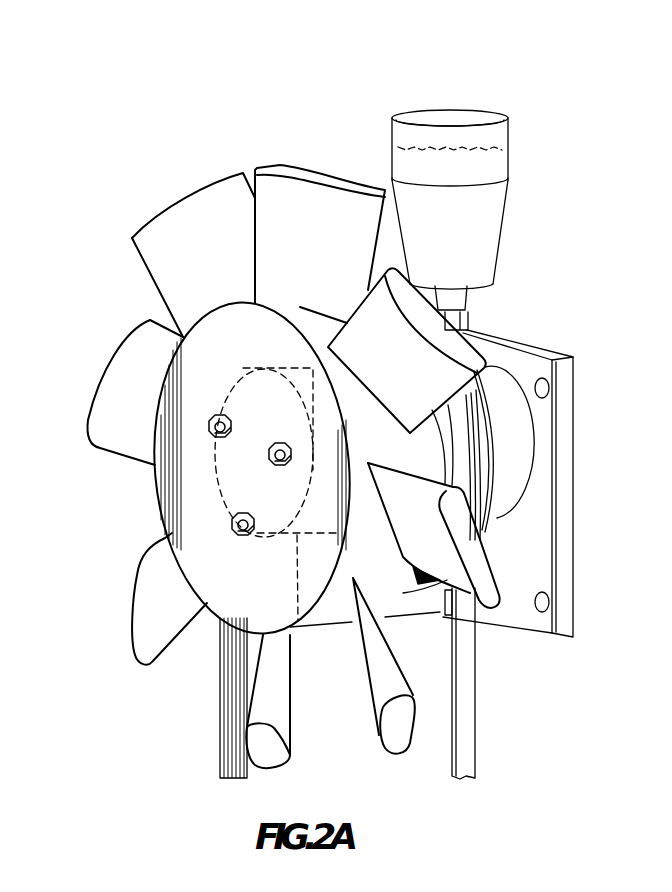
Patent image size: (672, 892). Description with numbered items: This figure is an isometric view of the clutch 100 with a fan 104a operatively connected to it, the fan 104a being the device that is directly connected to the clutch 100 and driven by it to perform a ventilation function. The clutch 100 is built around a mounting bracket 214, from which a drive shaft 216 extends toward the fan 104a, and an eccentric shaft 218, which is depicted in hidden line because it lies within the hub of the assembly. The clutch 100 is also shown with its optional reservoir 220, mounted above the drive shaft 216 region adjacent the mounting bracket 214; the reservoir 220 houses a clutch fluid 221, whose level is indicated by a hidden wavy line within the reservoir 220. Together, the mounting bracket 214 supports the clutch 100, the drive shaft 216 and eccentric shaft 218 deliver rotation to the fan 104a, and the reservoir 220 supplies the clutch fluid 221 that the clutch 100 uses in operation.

The clutch 100 is at (176, 138).
The fan 104a is at (150, 645).
The mounting bracket 214 is at (527, 348).
The drive shaft 216 is at (478, 447).
The eccentric shaft 218 is at (298, 620).
The reservoir 220 is at (512, 128).
The clutch fluid 221 is at (400, 147).